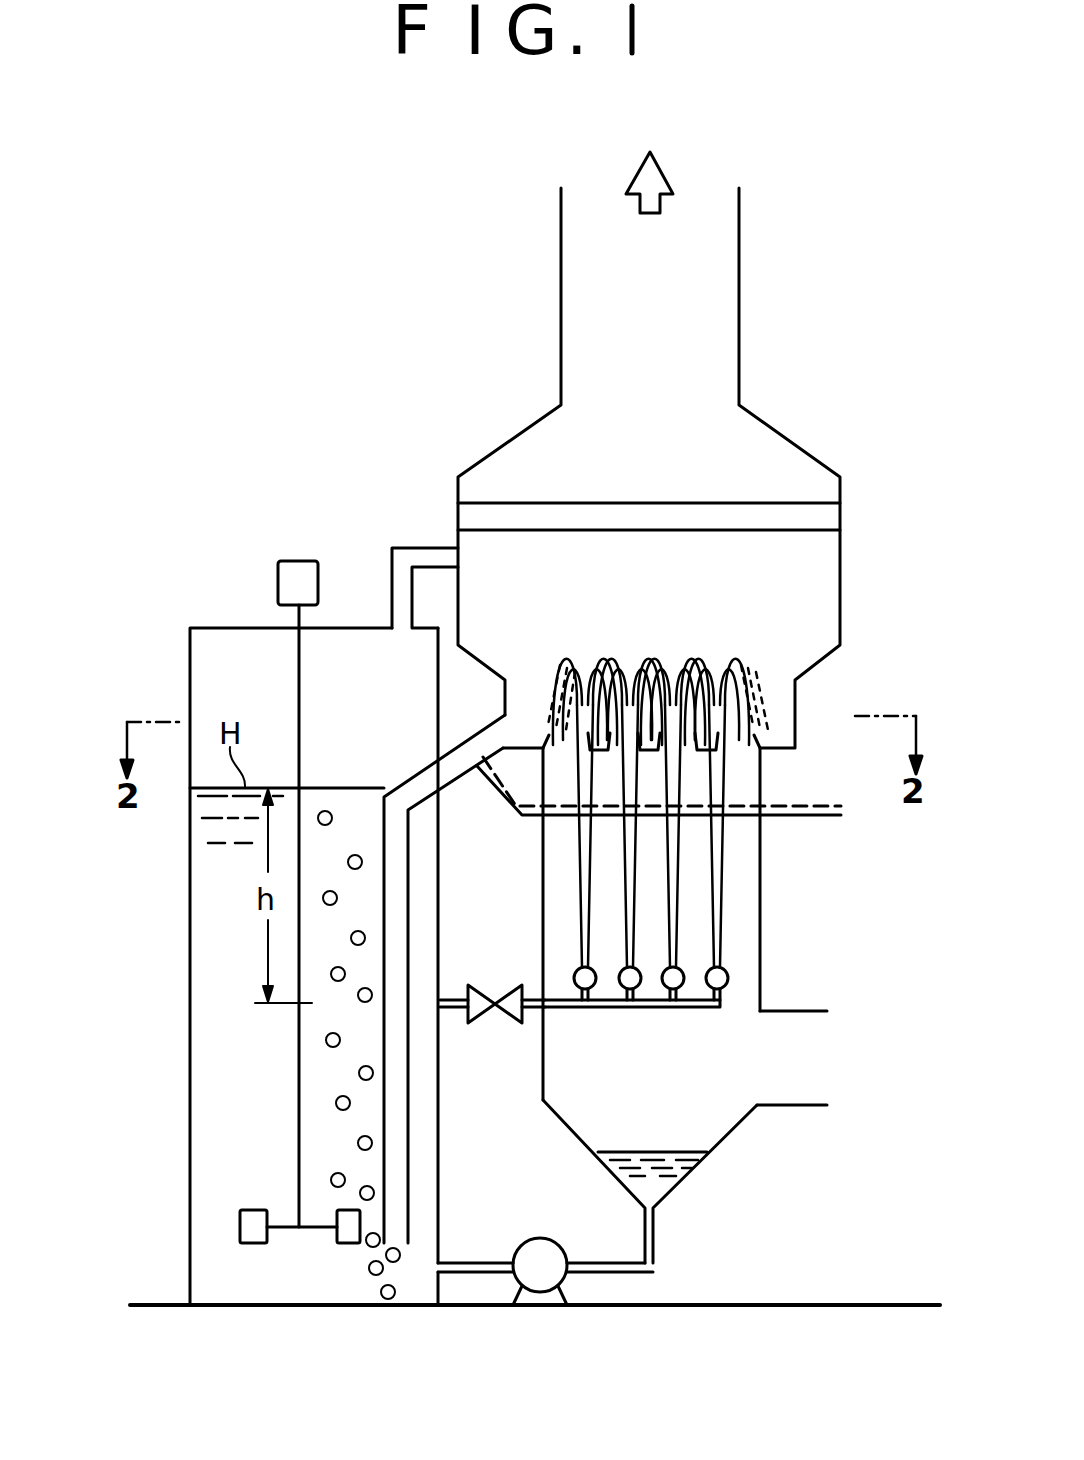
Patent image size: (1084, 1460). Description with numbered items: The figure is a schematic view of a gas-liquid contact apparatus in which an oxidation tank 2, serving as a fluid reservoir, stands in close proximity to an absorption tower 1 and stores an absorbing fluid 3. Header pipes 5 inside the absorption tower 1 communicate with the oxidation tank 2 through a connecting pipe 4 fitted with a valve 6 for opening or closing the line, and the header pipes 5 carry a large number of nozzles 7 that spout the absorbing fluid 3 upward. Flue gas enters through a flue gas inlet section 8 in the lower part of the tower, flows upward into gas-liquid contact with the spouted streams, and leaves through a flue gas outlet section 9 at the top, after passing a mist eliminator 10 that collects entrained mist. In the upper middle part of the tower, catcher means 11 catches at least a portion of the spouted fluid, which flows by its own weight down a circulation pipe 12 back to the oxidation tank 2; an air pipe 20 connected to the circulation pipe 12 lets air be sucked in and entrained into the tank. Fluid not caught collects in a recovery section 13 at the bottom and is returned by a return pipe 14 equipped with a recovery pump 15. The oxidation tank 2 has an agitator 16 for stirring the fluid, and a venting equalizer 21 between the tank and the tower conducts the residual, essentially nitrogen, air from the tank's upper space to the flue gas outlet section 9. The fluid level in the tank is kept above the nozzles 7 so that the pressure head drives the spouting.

The absorption tower 1 is at (840, 590).
The oxidation tank 2 is at (190, 976).
The absorbing fluid 3 is at (200, 1093).
The connecting pipe 4 is at (462, 1012).
The header pipes 5 is at (645, 1009).
The valve 6 is at (486, 985).
The nozzles 7 is at (727, 981).
The flue gas inlet section 8 is at (800, 1063).
The flue gas outlet section 9 is at (702, 222).
The mist eliminator 10 is at (806, 502).
The catcher means 11 is at (778, 734).
The circulation pipe 12 is at (413, 767).
The recovery section 13 is at (700, 1152).
The return pipe 14 is at (654, 1253).
The recovery pump 15 is at (527, 1240).
The agitator 16 is at (288, 1230).
The air pipe 20 is at (812, 817).
The venting equalizer 21 is at (415, 546).